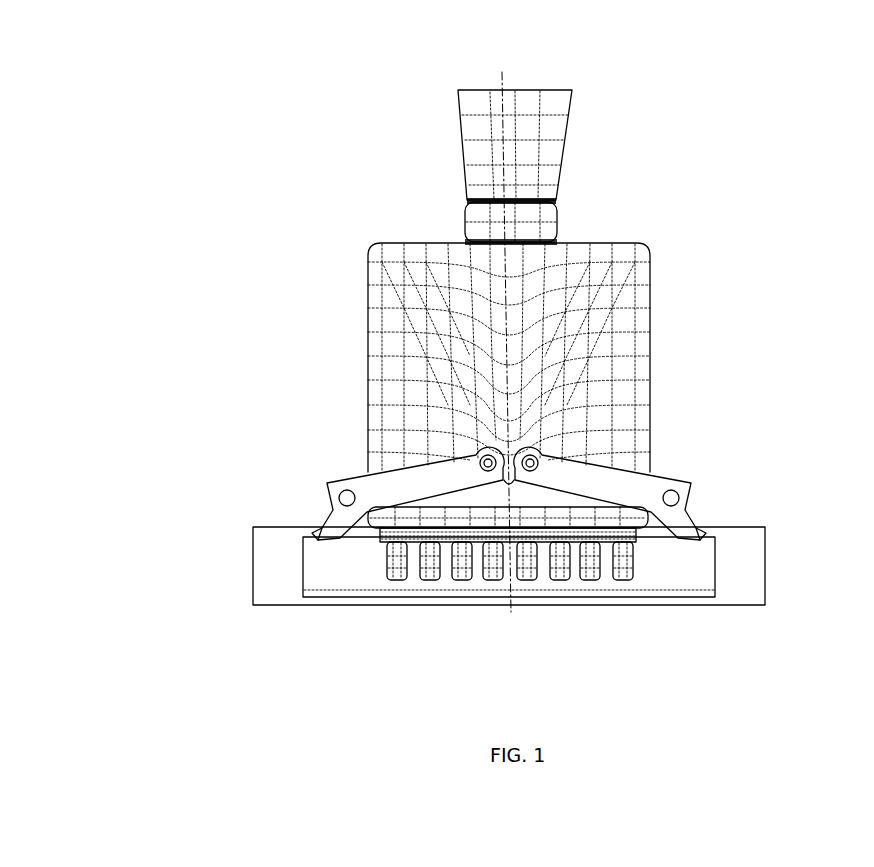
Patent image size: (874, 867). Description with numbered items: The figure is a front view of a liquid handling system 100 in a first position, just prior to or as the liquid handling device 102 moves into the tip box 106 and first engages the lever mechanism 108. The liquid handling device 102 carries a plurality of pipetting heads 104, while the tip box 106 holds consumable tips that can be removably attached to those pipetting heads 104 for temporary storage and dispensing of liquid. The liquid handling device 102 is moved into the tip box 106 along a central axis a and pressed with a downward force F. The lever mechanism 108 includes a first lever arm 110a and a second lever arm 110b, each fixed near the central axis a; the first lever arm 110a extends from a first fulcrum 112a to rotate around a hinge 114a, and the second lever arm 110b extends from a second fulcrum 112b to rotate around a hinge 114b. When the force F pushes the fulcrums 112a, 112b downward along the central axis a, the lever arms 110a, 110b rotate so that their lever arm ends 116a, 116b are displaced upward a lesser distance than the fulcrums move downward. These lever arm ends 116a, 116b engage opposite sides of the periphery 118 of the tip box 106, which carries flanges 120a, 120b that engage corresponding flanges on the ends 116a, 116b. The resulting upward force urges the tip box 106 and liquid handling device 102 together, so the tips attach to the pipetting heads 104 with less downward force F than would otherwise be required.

The liquid handling system 100 is at (156, 180).
The liquid handling device 102 is at (428, 245).
The pipetting heads 104 is at (395, 562).
The tip box 106 is at (257, 573).
The lever mechanism 108 is at (569, 457).
The first lever arm 110a is at (403, 468).
The second lever arm 110b is at (600, 468).
The first fulcrum 112a is at (476, 447).
The second fulcrum 112b is at (546, 445).
The hinge 114a is at (479, 460).
The hinge 114b is at (529, 456).
The lever arm end 116a is at (322, 525).
The lever arm end 116b is at (692, 530).
The periphery 118 is at (290, 520).
The flange 120a is at (305, 535).
The flange 120b is at (706, 528).
The force F is at (500, 6).
The central axis a is at (503, 120).